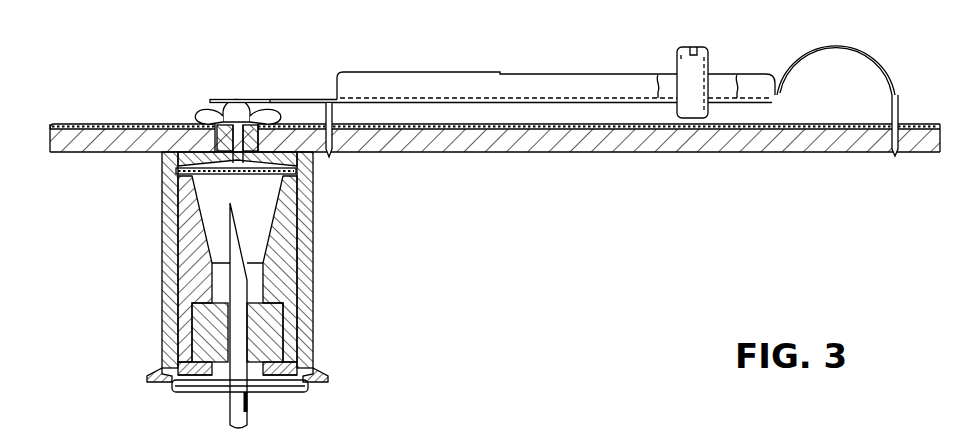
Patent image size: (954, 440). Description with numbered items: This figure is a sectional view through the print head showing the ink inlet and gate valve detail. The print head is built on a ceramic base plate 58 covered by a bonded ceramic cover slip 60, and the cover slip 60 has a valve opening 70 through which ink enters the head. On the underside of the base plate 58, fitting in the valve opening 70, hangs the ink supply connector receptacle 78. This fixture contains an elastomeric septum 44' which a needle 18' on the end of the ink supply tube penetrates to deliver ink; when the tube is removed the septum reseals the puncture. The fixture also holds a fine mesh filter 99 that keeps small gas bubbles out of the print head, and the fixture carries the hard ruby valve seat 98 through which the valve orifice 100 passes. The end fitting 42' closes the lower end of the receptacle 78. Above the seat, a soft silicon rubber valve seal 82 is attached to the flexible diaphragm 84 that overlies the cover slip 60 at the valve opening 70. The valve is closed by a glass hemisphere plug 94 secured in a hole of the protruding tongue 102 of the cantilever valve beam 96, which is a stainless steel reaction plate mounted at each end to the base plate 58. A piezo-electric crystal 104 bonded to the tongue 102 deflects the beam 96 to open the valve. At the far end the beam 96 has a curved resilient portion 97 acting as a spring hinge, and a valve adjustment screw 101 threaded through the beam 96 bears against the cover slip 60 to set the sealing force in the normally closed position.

The needle 18' is at (264, 315).
The base cap 42' is at (265, 387).
The septum 44' is at (292, 335).
The ceramic base plate 58 is at (530, 153).
The ceramic cover slip 60 is at (609, 153).
The valve opening 70 is at (213, 147).
The ink supply connector receptacle 78 is at (313, 315).
The valve seal 82 is at (253, 118).
The diaphragm 84 is at (204, 116).
The glass hemisphere plug 94 is at (238, 105).
The valve beam 96 is at (398, 78).
The curved resilient portion 97 is at (896, 68).
The valve seat 98 is at (313, 167).
The fine mesh filter 99 is at (258, 176).
The valve orifice 100 is at (215, 160).
The valve adjustment screw 101 is at (709, 56).
The protruding tongue 102 is at (213, 100).
The piezo-electric crystal 104 is at (312, 98).